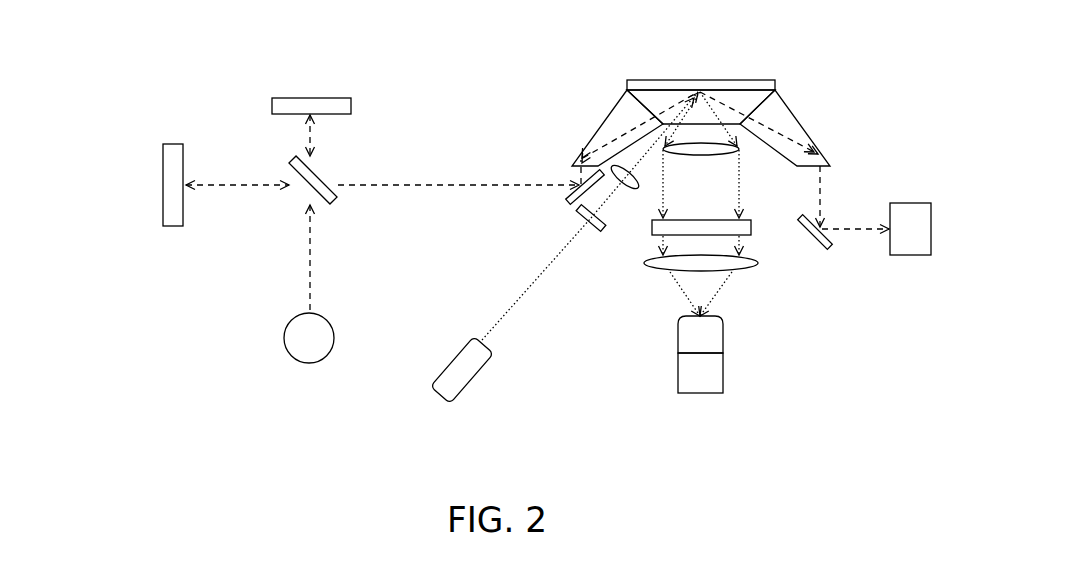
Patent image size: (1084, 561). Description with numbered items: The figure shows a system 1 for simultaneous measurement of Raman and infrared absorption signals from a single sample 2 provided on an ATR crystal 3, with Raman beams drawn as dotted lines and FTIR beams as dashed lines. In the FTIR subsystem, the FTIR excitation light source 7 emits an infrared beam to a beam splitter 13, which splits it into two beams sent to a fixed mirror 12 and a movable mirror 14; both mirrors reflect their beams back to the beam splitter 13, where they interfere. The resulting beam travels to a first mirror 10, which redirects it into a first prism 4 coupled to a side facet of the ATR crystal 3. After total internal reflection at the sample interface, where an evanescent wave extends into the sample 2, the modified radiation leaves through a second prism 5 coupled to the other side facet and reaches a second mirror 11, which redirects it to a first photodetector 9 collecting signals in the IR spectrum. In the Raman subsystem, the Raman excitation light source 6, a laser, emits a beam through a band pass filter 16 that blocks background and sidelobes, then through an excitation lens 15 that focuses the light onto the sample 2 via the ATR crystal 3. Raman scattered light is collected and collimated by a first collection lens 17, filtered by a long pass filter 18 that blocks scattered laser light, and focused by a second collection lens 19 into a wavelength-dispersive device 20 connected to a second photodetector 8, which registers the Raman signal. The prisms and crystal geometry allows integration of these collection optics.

The system 1 is at (133, 327).
The sample 2 is at (733, 82).
The ATR crystal 3 is at (652, 98).
The first prism 4 is at (620, 110).
The second prism 5 is at (780, 115).
The Raman excitation light source 6 is at (462, 370).
The FTIR excitation light source 7 is at (313, 337).
The second photodetector 8 is at (706, 380).
The first photodetector 9 is at (903, 208).
The first mirror 10 is at (575, 198).
The second mirror 11 is at (830, 248).
The fixed mirror 12 is at (168, 170).
The beam splitter 13 is at (327, 200).
The movable mirror 14 is at (333, 105).
The excitation lens 15 is at (633, 184).
The band pass filter 16 is at (580, 221).
The first collection lens 17 is at (710, 152).
The long pass filter 18 is at (743, 228).
The second collection lens 19 is at (745, 264).
The wavelength-dispersive device 20 is at (686, 337).